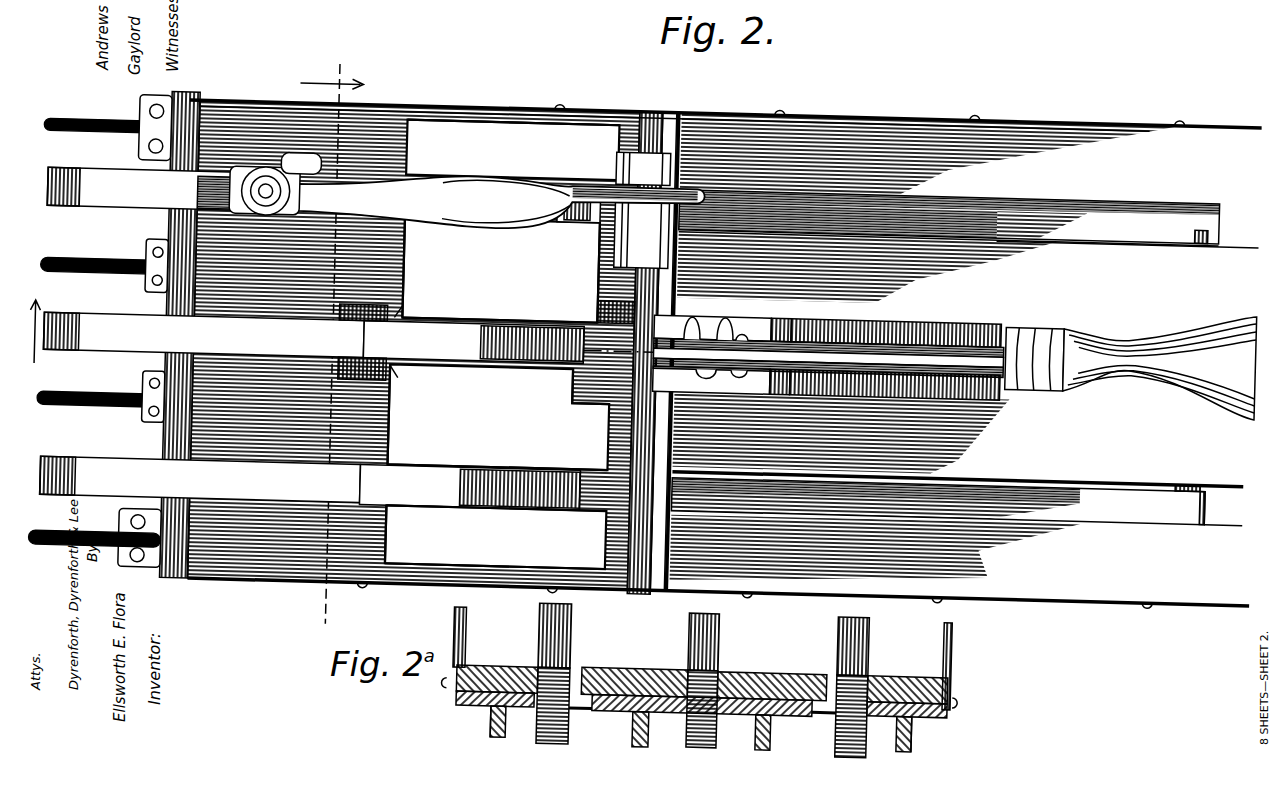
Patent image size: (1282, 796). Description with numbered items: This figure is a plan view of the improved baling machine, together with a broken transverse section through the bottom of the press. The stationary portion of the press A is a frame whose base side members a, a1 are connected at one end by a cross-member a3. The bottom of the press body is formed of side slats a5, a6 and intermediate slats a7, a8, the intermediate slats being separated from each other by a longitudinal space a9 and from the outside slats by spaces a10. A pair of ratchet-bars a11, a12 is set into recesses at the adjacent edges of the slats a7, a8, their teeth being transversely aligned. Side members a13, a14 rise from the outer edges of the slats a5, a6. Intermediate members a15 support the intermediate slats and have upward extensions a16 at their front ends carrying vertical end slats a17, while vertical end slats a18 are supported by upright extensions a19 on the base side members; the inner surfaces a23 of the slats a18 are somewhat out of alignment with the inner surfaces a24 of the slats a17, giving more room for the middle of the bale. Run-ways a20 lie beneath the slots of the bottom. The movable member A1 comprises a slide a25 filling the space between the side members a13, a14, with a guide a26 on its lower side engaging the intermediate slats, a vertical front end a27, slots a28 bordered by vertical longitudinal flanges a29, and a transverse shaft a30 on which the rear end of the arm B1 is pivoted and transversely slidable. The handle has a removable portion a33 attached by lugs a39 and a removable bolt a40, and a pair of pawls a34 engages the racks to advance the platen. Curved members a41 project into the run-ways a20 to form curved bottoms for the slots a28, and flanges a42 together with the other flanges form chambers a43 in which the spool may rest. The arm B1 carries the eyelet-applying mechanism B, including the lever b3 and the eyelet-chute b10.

In FIG. 2, the base side member a is at (55, 527).
In FIG. 2A, the base side member a is at (913, 733).
In FIG. 2, the base side member a1 is at (56, 122).
In FIG. 2A, the base side member a1 is at (493, 723).
In FIG. 2, the cross-member a3 is at (1197, 247).
In FIG. 2, the side slat a5 is at (876, 552).
In FIG. 2A, the side slat a5 is at (897, 680).
In FIG. 2, the side slat a6 is at (930, 158).
In FIG. 2A, the side slat a6 is at (500, 668).
In FIG. 2, the intermediate slat a7 is at (841, 433).
In FIG. 2A, the intermediate slat a7 is at (767, 677).
In FIG. 2, the intermediate slat a8 is at (948, 272).
In FIG. 2A, the intermediate slat a8 is at (630, 670).
In FIG. 2, the longitudinal space a9 is at (1012, 327).
In FIG. 2, the space a10 is at (1240, 240).
In FIG. 2, the ratchet-bar a11 is at (893, 383).
In FIG. 2, the ratchet-bar a12 is at (405, 307).
In FIG. 2, the side member a13 is at (1057, 600).
In FIG. 2A, the side member a13 is at (950, 657).
In FIG. 2, the side member a14 is at (1047, 127).
In FIG. 2A, the side member a14 is at (457, 623).
In FIG. 2, the intermediate member a15 is at (58, 250).
In FIG. 2, the upward extension a16 is at (130, 263).
In FIG. 2, the vertical end slat a17 is at (200, 377).
In FIG. 2, the vertical end slat a18 is at (197, 100).
In FIG. 2, the upright extension a19 is at (133, 127).
In FIG. 2, the run-way a20 is at (133, 183).
In FIG. 2, the inner surface a23 is at (220, 110).
In FIG. 2, the inner surface a24 is at (192, 380).
In FIG. 2, the slide a25 is at (673, 280).
In FIG. 2A, the guide a26 is at (583, 703).
In FIG. 2, the vertical front end a27 is at (403, 260).
In FIG. 2, the slot a28 is at (563, 220).
In FIG. 2, the vertical longitudinal flange a29 is at (517, 367).
In FIG. 2, the transverse shaft a30 is at (630, 463).
In FIG. 2, the removable portion of handle a33 is at (970, 333).
In FIG. 2, the pawl a34 is at (750, 327).
In FIG. 2, the lug a39 is at (730, 360).
In FIG. 2, the removable bolt a40 is at (710, 373).
In FIG. 2, the curved member a41 is at (471, 416).
In FIG. 2A, the curved member a41 is at (701, 730).
In FIG. 2, the flange a42 is at (513, 122).
In FIG. 2, the chamber a43 is at (502, 344).
In FIG. 2, the press A is at (603, 339).
In FIG. 2, the movable member A1 is at (522, 394).
In FIG. 2, the eyelet-applying mechanism B is at (380, 175).
In FIG. 2, the arm B1 is at (573, 190).
In FIG. 2, the lever b3 is at (506, 201).
In FIG. 2, the eyelet-chute b10 is at (200, 187).